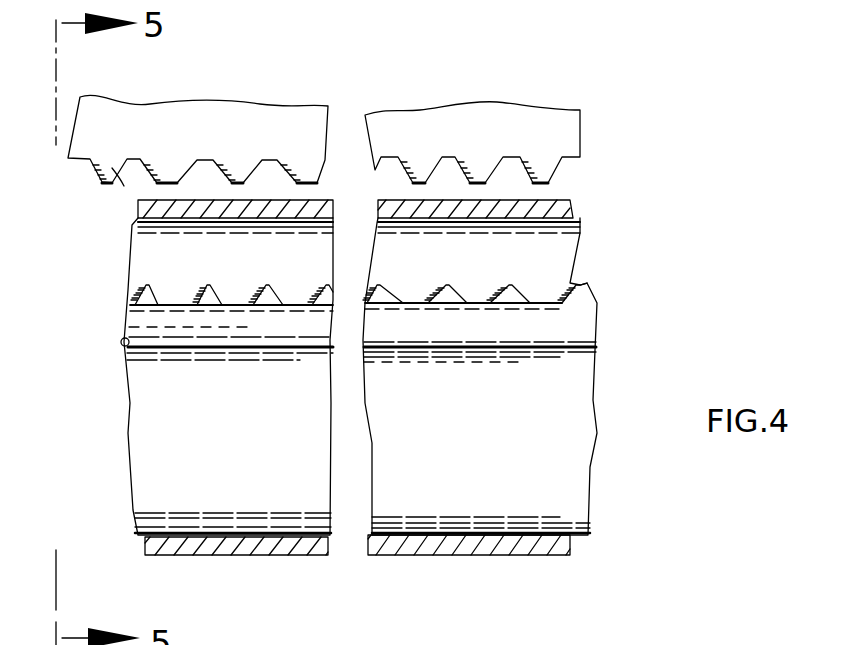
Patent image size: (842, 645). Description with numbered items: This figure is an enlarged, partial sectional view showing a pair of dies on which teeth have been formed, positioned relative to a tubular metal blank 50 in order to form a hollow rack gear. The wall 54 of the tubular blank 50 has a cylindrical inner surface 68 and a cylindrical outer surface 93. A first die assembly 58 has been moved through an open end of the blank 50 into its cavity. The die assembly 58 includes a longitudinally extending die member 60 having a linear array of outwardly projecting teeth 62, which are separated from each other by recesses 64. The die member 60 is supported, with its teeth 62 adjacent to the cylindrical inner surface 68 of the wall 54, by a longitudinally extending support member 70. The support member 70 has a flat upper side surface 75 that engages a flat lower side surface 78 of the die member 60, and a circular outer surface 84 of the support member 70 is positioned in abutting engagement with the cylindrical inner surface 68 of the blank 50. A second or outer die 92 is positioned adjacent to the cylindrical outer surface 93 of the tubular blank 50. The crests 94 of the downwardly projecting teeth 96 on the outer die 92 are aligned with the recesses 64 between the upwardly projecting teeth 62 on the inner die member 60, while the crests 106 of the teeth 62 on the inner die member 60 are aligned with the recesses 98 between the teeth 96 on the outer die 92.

The tubular metal blank 50 is at (178, 573).
The wall 54 is at (235, 547).
The first die assembly 58 is at (648, 262).
The die member 60 is at (587, 335).
The teeth 62 is at (267, 286).
The recesses 64 is at (289, 293).
The cylindrical inner surface 68 is at (158, 222).
The support member 70 is at (586, 481).
The flat upper side surface 75 is at (170, 348).
The flat lower side surface 78 is at (121, 344).
The circular outer surface 84 is at (137, 536).
The outer die 92 is at (556, 97).
The cylindrical outer surface 93 is at (547, 200).
The crests 94 is at (107, 183).
The teeth 96 is at (155, 172).
The recesses 98 is at (288, 133).
The crests 106 is at (147, 286).